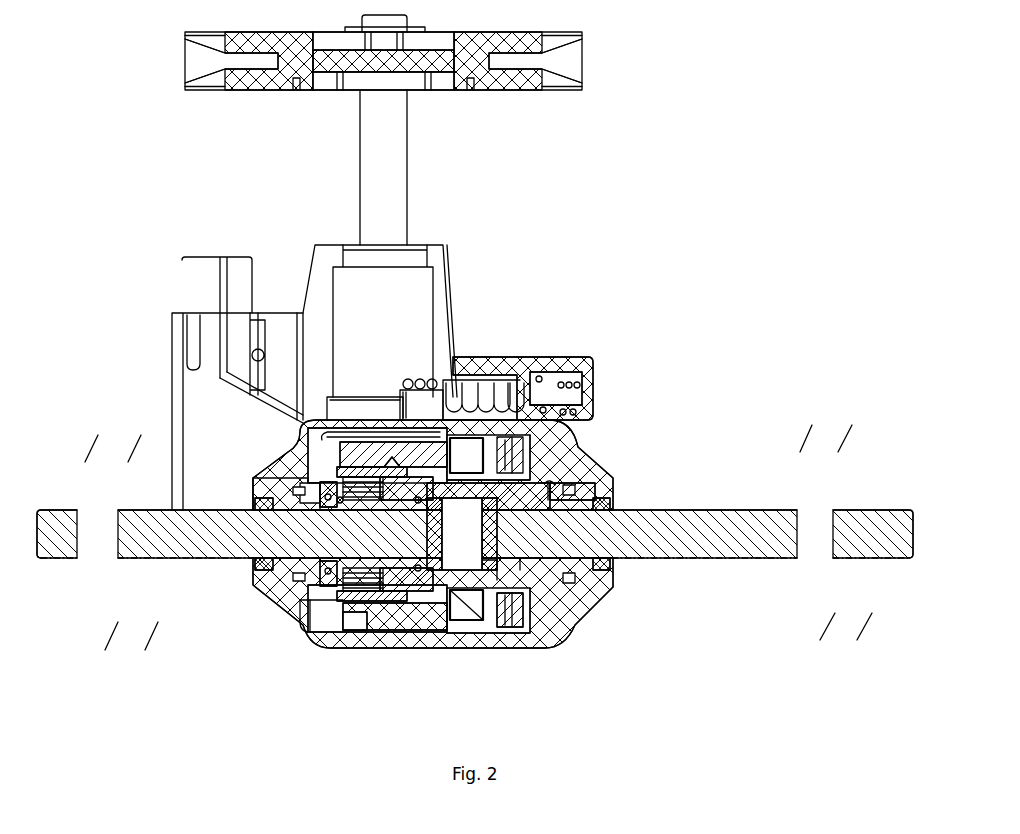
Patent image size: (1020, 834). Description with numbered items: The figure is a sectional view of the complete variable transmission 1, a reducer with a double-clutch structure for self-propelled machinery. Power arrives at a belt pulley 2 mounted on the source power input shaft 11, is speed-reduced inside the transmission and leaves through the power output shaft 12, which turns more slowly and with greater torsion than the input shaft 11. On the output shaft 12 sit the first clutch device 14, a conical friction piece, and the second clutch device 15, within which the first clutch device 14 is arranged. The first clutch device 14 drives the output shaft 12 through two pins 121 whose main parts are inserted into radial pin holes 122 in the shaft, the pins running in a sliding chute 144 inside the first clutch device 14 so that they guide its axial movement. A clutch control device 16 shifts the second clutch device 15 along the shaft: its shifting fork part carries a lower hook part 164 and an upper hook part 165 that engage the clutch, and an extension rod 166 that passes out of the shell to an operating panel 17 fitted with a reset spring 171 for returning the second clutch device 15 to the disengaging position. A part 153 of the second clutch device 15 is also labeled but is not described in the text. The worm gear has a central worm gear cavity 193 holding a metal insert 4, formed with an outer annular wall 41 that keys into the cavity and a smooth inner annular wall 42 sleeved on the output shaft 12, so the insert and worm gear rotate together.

The variable transmission 1 is at (664, 228).
The belt pulley 2 is at (502, 49).
The metal insert 4 is at (318, 478).
The source power input shaft 11 is at (397, 175).
The power output shaft 12 is at (475, 558).
The first clutch device 14 is at (578, 578).
The second clutch device 15 is at (457, 629).
The clutch control device 16 is at (455, 523).
The operating panel 17 is at (567, 379).
The outer annular wall 41 is at (360, 595).
The inner annular wall 42 is at (365, 582).
The pins 121 is at (495, 580).
The pin holes 122 is at (519, 677).
The sliding chute 144 is at (697, 502).
The housing insert 153 is at (548, 482).
The lower hook part 164 is at (540, 614).
The upper hook part 165 is at (545, 455).
The extension rod 166 is at (507, 372).
The reset spring 171 is at (583, 407).
The worm gear cavity 193 is at (335, 597).